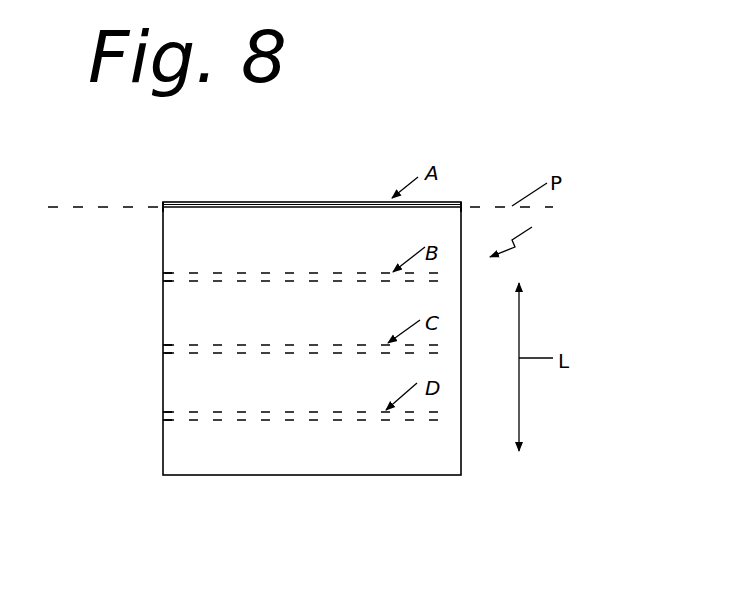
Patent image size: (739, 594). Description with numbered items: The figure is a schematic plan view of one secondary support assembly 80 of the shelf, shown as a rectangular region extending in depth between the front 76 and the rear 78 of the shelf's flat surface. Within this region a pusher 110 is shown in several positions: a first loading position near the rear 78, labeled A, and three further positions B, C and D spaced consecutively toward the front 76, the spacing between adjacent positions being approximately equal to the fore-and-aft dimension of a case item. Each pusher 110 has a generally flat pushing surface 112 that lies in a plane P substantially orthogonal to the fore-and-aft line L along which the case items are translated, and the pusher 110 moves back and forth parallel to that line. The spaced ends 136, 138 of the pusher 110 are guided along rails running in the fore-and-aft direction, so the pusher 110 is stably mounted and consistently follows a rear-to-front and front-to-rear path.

The front 76 is at (312, 371).
The rear 78 is at (330, 202).
The secondary support assembly 80 is at (526, 236).
The pusher 110 is at (312, 274).
The pushing surface 112 is at (127, 346).
The spaced end 136 is at (120, 174).
The spaced end 138 is at (502, 174).